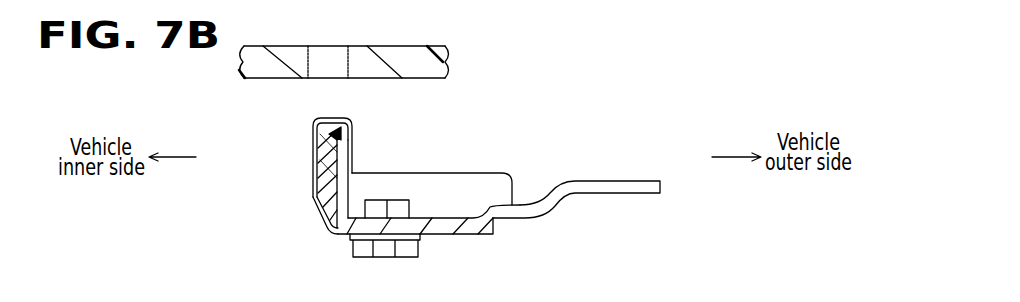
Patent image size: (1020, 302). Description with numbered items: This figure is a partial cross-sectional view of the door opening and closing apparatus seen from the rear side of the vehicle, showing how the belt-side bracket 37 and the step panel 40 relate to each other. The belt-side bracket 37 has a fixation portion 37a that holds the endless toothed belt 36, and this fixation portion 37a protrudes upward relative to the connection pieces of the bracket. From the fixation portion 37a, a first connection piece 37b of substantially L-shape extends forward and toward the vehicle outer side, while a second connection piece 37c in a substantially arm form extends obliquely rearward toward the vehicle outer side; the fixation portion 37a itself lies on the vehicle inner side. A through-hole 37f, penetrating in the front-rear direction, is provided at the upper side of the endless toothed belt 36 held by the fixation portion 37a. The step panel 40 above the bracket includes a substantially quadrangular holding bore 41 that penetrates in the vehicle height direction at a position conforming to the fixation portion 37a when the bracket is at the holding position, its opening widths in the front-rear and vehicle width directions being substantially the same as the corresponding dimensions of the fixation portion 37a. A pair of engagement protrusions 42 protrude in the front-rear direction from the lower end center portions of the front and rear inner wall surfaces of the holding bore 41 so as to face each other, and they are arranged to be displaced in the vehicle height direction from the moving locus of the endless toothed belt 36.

The endless toothed belt 36 is at (312, 172).
The belt-side bracket 37 is at (481, 168).
The fixation portion 37a is at (323, 206).
The first connection piece 37b is at (612, 195).
The second connection piece 37c is at (477, 224).
The through-hole 37f is at (343, 129).
The step panel 40 is at (412, 45).
The holding bore 41 is at (314, 61).
The engagement protrusions 42 is at (330, 71).